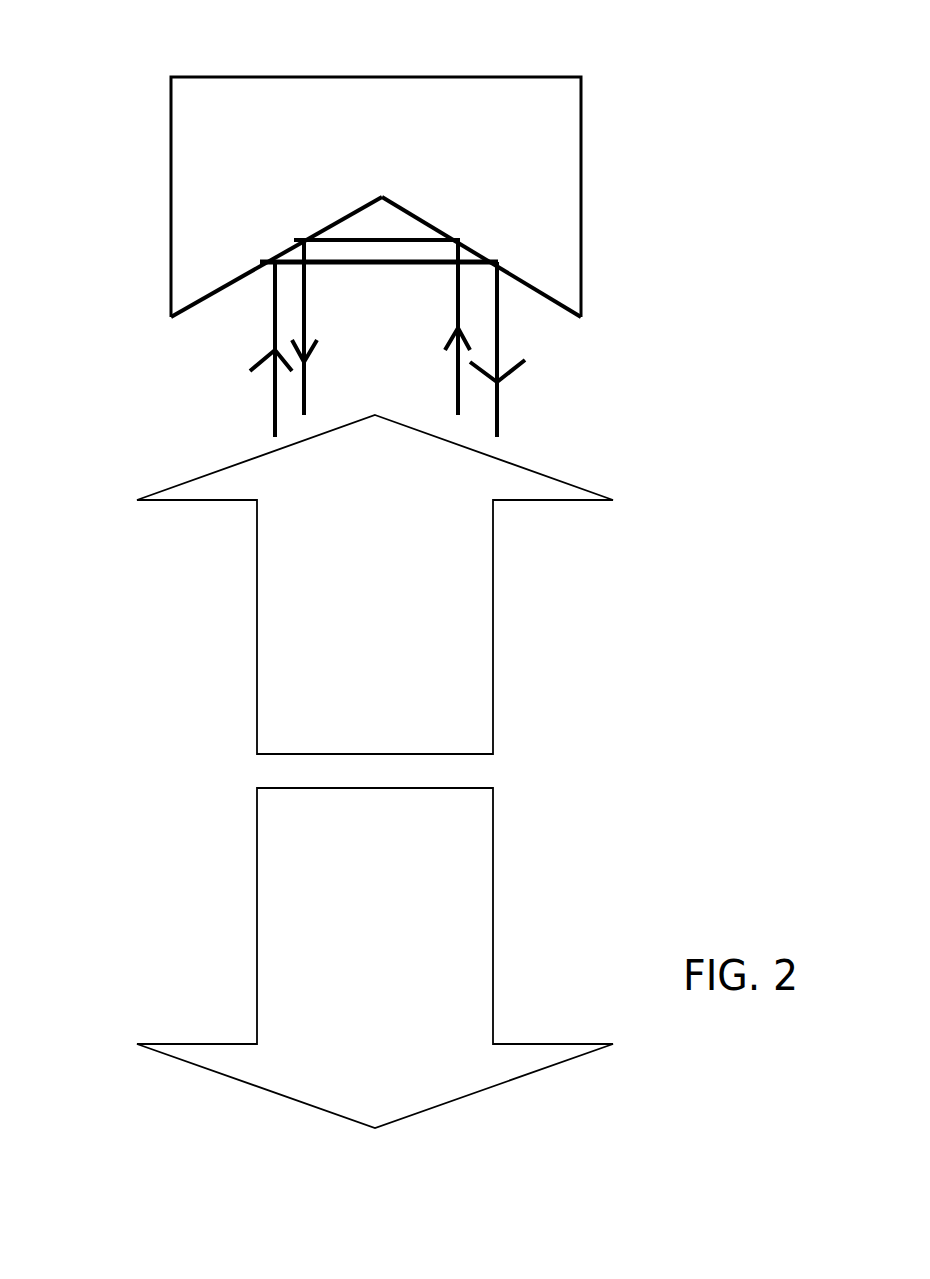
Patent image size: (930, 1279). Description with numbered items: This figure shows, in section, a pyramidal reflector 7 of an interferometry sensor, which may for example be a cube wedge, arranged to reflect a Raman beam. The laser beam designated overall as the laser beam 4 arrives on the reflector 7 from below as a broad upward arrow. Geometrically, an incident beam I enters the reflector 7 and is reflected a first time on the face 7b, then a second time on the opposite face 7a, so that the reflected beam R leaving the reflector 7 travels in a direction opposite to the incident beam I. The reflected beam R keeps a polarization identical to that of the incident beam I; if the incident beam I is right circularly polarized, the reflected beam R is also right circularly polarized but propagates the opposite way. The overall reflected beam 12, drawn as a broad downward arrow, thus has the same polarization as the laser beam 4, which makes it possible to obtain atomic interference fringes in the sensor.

The pyramidal reflector 7 is at (193, 143).
The opposite face 7a is at (538, 293).
The face 7b is at (205, 297).
The laser beam 4 is at (282, 712).
The reflected beam 12 is at (282, 963).
The incident beam I is at (272, 405).
The reflected beam R is at (502, 405).